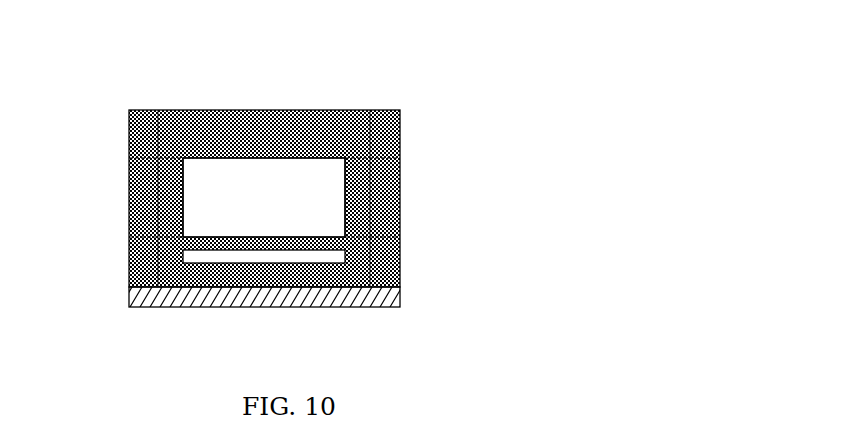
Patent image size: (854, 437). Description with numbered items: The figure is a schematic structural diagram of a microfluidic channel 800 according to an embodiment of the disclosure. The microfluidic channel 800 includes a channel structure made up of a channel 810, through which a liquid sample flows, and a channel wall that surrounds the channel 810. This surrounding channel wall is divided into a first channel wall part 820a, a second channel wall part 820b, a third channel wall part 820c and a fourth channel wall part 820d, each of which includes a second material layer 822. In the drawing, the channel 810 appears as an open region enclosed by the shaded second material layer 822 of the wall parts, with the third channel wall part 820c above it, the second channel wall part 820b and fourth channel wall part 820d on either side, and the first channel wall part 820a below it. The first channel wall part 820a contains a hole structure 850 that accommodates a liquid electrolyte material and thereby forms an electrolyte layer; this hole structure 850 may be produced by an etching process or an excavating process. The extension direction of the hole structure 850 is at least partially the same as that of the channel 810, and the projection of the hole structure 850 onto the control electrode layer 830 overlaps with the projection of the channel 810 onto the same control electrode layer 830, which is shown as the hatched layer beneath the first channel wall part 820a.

The microfluidic channel 800 is at (118, 97).
The channel 810 is at (323, 212).
The first channel wall part 820a is at (339, 272).
The second channel wall part 820b is at (382, 224).
The third channel wall part 820c is at (325, 132).
The fourth channel wall part 820d is at (165, 197).
The second material layer 822 is at (390, 133).
The control electrode layer 830 is at (385, 293).
The hole structure 850 is at (220, 260).